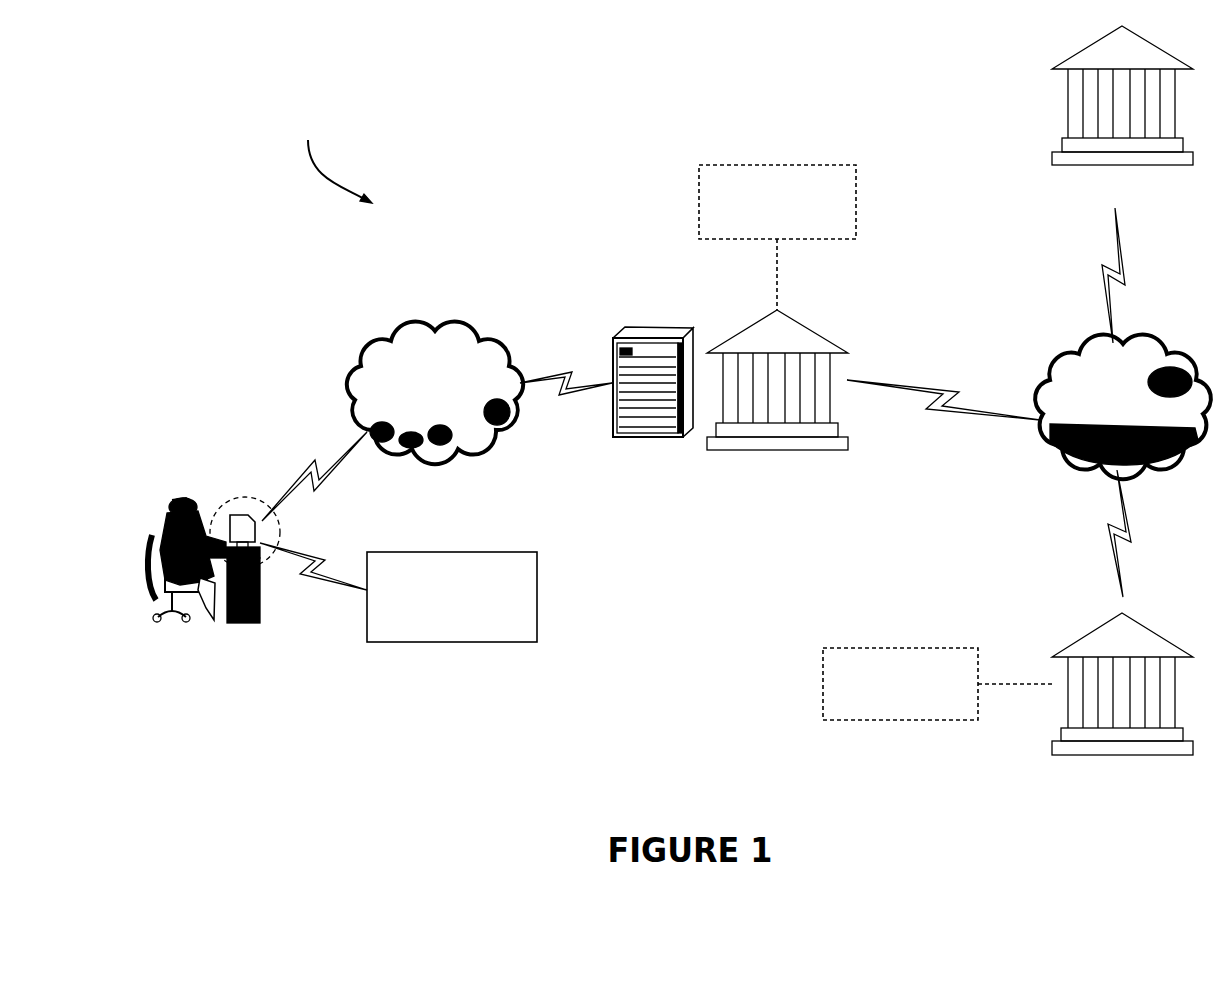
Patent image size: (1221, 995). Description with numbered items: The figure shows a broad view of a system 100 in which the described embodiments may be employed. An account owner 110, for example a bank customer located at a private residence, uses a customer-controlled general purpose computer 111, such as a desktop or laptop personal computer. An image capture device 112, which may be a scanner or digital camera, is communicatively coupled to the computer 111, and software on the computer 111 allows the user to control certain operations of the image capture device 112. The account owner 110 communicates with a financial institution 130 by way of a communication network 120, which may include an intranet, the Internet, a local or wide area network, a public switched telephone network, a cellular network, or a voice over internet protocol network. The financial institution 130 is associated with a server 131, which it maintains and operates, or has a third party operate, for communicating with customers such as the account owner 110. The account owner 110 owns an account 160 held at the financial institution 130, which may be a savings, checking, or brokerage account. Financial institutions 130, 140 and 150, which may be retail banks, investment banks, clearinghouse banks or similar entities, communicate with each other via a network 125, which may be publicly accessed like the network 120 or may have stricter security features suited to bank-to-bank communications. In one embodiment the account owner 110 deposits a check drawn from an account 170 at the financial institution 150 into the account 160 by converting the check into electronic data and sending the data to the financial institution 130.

The system 100 is at (325, 153).
The account owner 110 is at (231, 592).
The general purpose computer 111 is at (245, 518).
The image capture device 112 is at (452, 597).
The communication network 120 is at (435, 393).
The network 125 is at (1123, 407).
The financial institution 130 is at (777, 395).
The server 131 is at (642, 398).
The financial institution 140 is at (1122, 110).
The financial institution 150 is at (1122, 698).
The account 160 is at (777, 237).
The account 170 is at (937, 684).